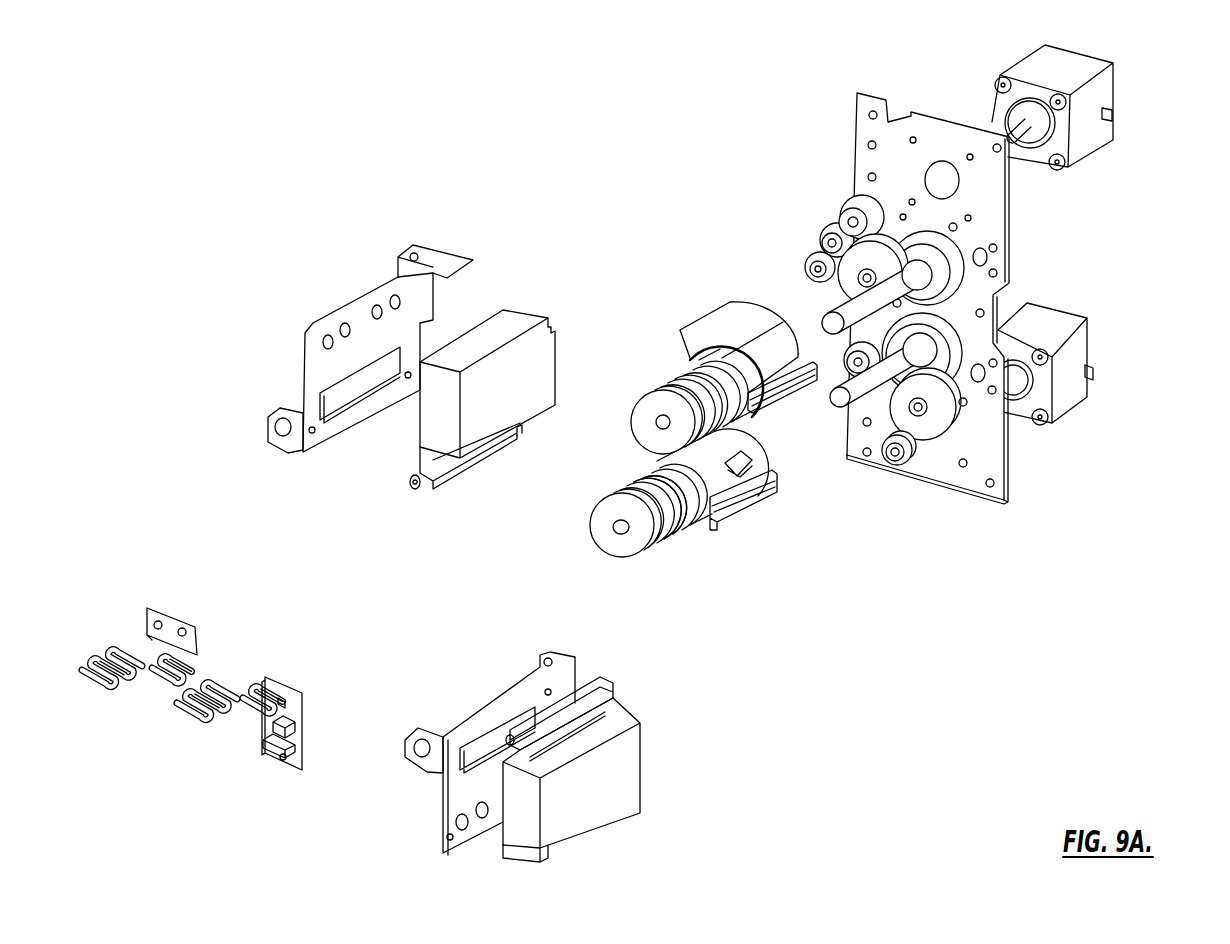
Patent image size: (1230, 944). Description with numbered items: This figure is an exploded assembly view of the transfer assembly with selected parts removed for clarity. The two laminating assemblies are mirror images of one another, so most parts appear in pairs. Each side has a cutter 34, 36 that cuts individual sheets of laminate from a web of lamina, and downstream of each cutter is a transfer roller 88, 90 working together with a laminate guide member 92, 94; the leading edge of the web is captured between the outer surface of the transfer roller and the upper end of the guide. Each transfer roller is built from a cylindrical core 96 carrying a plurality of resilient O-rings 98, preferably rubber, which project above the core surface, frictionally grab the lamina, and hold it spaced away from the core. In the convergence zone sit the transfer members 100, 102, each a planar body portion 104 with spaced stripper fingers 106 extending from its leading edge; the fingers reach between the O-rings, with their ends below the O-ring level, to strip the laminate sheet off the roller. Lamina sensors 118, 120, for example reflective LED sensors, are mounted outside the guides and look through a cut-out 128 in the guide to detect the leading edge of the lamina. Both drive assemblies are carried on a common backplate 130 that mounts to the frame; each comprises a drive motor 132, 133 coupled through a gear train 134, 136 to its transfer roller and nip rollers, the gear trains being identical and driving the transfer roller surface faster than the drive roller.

The cutter 34 is at (502, 326).
The cutter 36 is at (577, 818).
The transfer roller 88 is at (645, 407).
The transfer roller 90 is at (603, 520).
The laminate guide member 92 is at (737, 325).
The laminate guide member 94 is at (718, 484).
The cylindrical core 96 is at (624, 548).
The resilient O-rings 98 is at (627, 487).
The transfer member 100 is at (142, 636).
The transfer member 102 is at (208, 722).
The planar body portion 104 is at (118, 672).
The stripper fingers 106 is at (178, 672).
The lamina sensor 118 is at (292, 683).
The lamina sensor 120 is at (264, 750).
The cut-out 128 is at (757, 452).
The common backplate 130 is at (988, 212).
The drive motor 132 is at (1103, 95).
The drive motor 133 is at (1085, 358).
The gear train 134 is at (899, 195).
The gear train 136 is at (977, 412).